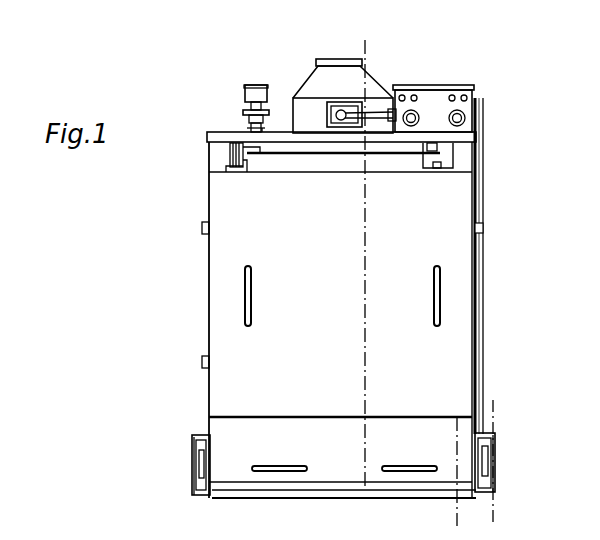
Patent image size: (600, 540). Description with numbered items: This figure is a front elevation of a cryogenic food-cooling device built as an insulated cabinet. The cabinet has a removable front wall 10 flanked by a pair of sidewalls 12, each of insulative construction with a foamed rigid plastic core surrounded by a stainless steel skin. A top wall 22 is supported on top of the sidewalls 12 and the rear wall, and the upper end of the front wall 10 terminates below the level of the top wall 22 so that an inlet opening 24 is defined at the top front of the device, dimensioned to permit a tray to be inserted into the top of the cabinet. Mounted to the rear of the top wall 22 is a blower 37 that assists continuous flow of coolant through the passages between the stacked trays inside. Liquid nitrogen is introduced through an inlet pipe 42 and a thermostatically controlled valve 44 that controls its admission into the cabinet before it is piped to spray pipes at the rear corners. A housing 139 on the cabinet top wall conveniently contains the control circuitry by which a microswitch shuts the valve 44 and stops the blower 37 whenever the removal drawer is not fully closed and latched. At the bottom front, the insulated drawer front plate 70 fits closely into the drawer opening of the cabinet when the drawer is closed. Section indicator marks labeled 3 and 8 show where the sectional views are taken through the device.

The section line 3- 3 is at (376, 46).
The section line 8- 8 is at (493, 415).
The front wall 10 is at (336, 293).
The sidewalls 12 is at (206, 303).
The top wall 22 is at (266, 132).
The inlet opening 24 is at (443, 163).
The blower 37 is at (366, 86).
The inlet pipe 42 is at (248, 120).
The thermostatically controlled valve 44 is at (255, 90).
The drawer front plate 70 is at (232, 427).
The housing 139 is at (428, 98).